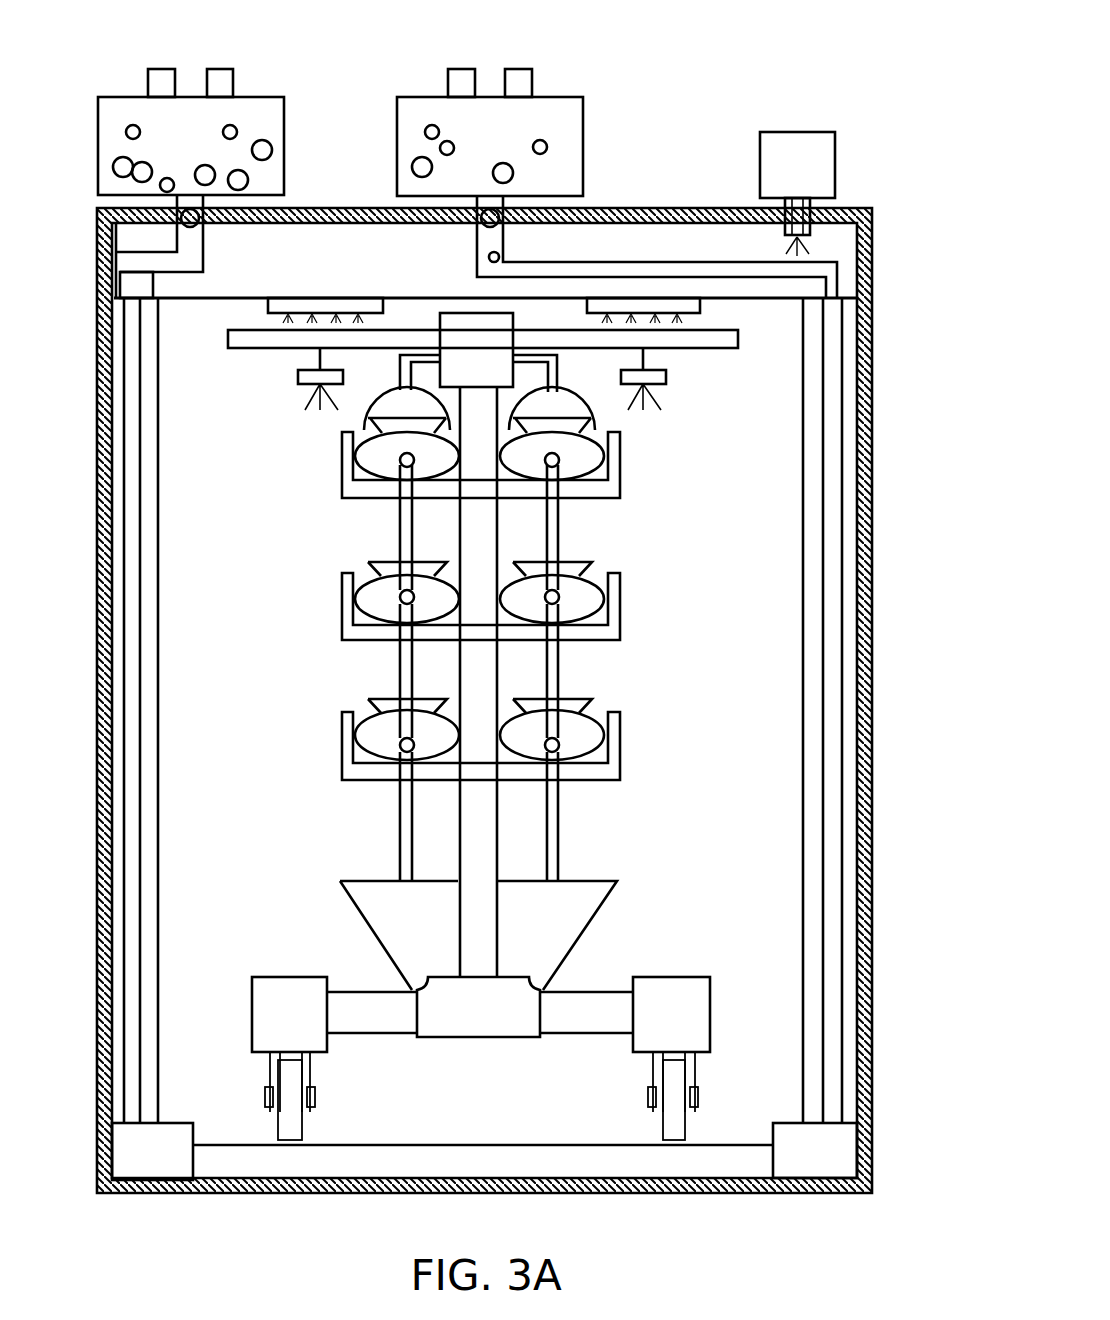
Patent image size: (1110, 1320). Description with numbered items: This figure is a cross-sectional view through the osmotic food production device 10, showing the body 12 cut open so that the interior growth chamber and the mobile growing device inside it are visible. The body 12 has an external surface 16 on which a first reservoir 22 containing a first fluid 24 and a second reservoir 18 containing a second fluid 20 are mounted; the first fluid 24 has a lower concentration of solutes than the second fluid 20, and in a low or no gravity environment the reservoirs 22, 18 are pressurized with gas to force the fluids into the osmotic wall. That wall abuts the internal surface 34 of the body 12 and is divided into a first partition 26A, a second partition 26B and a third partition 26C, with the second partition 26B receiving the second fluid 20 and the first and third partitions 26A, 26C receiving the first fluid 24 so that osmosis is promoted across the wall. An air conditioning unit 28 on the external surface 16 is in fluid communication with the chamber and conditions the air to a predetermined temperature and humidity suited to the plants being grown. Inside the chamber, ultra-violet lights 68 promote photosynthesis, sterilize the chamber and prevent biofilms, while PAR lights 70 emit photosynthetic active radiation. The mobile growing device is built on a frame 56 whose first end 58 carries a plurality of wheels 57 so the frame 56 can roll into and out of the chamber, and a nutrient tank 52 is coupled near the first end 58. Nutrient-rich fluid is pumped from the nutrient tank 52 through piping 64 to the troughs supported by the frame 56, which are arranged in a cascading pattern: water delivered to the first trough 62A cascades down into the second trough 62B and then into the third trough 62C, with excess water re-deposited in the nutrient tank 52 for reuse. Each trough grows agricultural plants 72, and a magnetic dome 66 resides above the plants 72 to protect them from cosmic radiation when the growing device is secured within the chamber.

The osmotic food production device 10 is at (888, 88).
The body 12 is at (873, 268).
The external surface 16 is at (942, 511).
The second reservoir 18 is at (412, 97).
The second fluid 20 is at (420, 165).
The first reservoir 22 is at (128, 97).
The first fluid 24 is at (262, 148).
The first partition 26A is at (203, 850).
The second partition 26B is at (133, 587).
The third partition 26C is at (150, 465).
The air conditioning unit 28 is at (797, 194).
The internal surface 34 is at (803, 868).
The nutrient tank 52 is at (582, 930).
The frame 56 is at (476, 350).
The wheels 57 is at (655, 1090).
The first end 58 is at (320, 932).
The first trough 62A is at (585, 467).
The second trough 62B is at (380, 598).
The third trough 62C is at (590, 727).
The piping 64 is at (557, 358).
The magnetic dome 66 is at (392, 366).
The ultra-violet lights 68 is at (335, 296).
The PAR lights 70 is at (298, 376).
The agricultural plants 72 is at (590, 572).